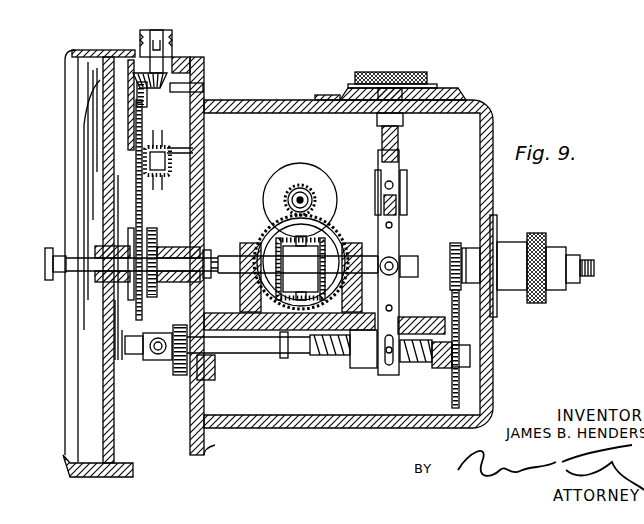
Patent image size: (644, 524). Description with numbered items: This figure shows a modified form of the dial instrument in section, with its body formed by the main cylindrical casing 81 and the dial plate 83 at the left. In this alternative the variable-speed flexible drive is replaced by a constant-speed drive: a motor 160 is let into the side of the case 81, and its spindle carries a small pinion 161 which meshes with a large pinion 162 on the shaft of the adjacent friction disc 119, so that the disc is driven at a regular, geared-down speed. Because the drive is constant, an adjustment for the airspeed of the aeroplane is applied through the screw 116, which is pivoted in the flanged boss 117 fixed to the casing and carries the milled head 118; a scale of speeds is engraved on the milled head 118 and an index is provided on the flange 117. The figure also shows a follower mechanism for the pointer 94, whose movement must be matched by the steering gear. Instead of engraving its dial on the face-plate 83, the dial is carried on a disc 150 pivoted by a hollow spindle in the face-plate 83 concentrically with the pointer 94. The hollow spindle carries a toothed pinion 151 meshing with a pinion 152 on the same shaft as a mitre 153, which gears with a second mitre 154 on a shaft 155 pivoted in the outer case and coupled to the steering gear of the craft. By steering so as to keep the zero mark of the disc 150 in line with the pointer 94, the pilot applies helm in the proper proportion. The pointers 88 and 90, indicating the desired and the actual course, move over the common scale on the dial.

The main cylindrical casing 81 is at (270, 105).
The dial plate 83 is at (99, 79).
The pointer 88 is at (89, 168).
The pointer 90 is at (86, 193).
The pointer 94 is at (94, 138).
The screw 116 is at (399, 141).
The flanged boss 117 is at (456, 97).
The milled head 118 is at (427, 80).
The friction disc 119 is at (310, 240).
The disc 150 is at (90, 100).
The toothed pinion 151 is at (136, 131).
The pinion 152 is at (140, 114).
The mitre 153 is at (165, 85).
The second mitre 154 is at (148, 84).
The shaft 155 is at (160, 53).
The motor 160 is at (312, 188).
The small pinion 161 is at (317, 196).
The large pinion 162 is at (322, 226).